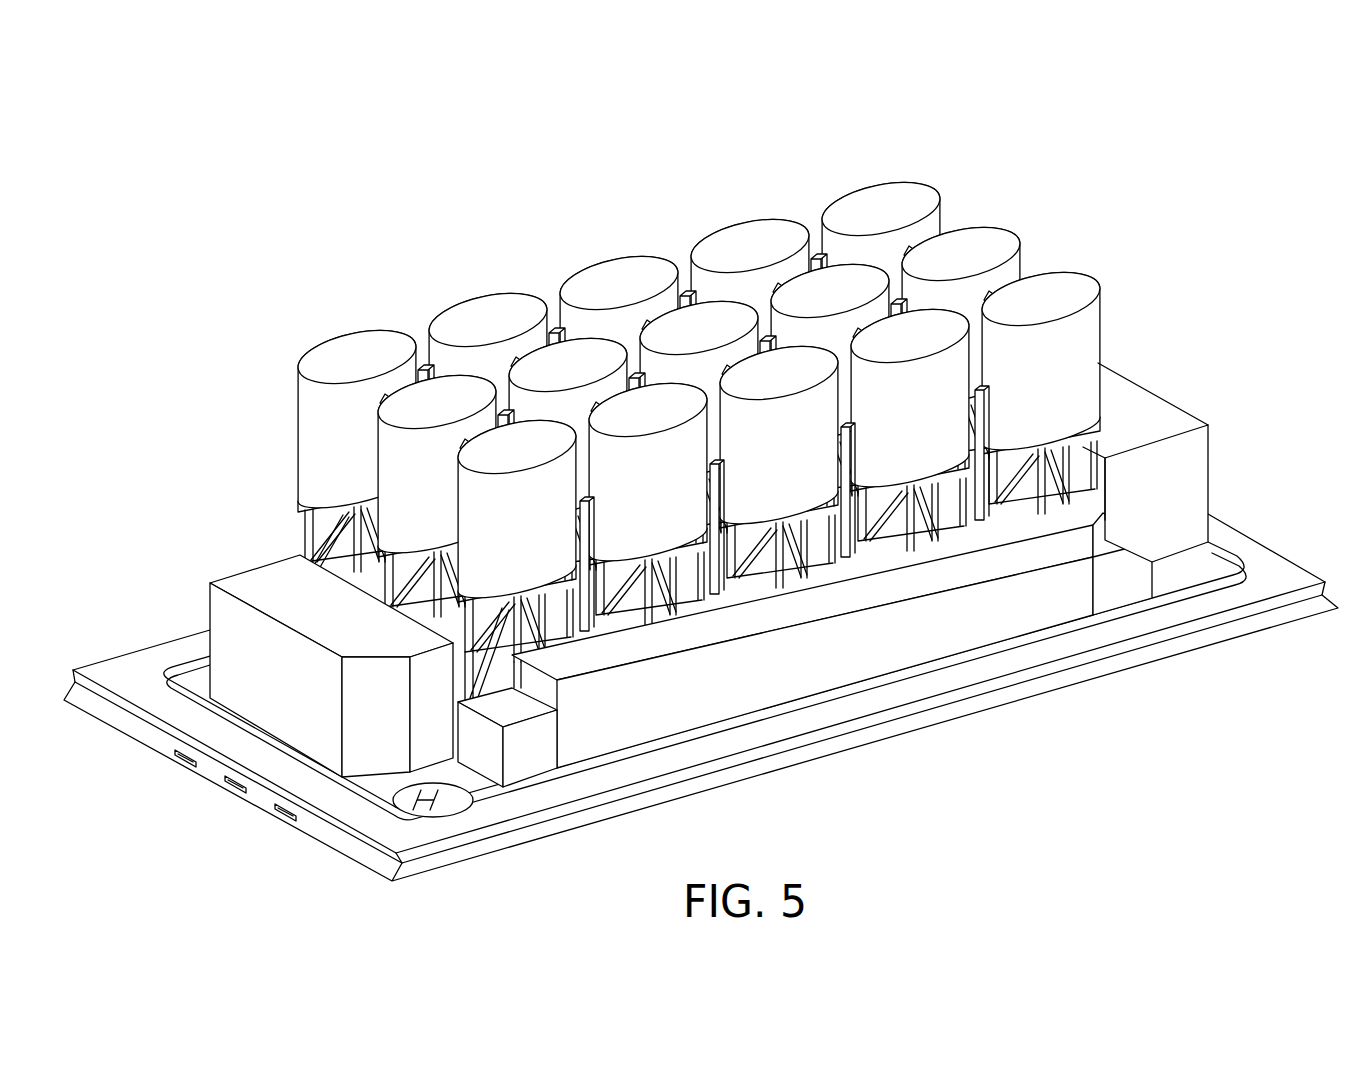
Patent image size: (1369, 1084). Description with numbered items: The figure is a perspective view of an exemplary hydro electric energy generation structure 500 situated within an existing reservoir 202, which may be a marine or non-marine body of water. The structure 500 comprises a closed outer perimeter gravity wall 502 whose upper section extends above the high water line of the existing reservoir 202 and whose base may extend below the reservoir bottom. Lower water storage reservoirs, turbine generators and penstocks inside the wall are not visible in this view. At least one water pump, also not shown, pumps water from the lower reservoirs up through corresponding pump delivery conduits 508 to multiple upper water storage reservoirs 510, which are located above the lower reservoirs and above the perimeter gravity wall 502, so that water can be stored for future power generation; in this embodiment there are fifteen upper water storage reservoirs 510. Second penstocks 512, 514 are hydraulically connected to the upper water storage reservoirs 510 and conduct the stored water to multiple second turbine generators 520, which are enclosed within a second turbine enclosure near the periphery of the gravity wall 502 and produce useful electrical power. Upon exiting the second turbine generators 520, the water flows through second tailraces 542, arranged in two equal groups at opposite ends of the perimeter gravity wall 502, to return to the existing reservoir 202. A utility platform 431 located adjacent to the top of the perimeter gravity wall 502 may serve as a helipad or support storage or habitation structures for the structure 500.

The hydro electric energy generation structure 500 is at (701, 492).
The existing reservoir 202 is at (701, 699).
The perimeter gravity wall 502 is at (113, 717).
The pump delivery conduit 508 is at (357, 557).
The upper water storage reservoir 510 is at (348, 343).
The second penstock 512 is at (330, 540).
The second penstock 514 is at (373, 575).
The second turbine generator 520 is at (242, 585).
The second tailrace 542 is at (177, 757).
The utility platform 431 is at (457, 798).